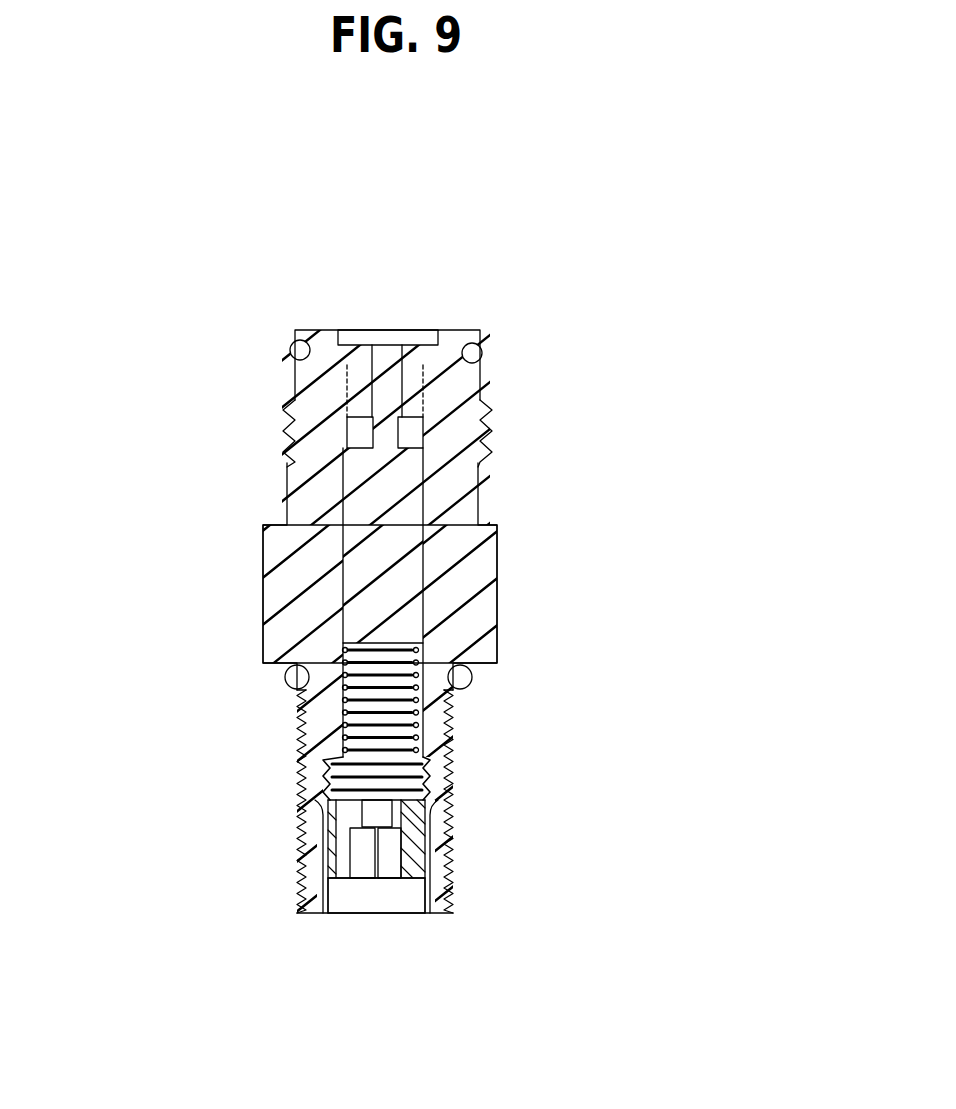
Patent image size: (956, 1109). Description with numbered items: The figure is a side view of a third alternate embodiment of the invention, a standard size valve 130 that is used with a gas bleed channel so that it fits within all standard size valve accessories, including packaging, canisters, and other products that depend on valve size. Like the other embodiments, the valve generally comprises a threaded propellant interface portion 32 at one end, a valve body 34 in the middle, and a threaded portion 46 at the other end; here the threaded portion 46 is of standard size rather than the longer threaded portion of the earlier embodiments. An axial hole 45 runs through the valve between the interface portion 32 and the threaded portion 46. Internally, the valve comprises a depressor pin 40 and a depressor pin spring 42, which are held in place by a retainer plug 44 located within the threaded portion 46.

The standard size valve 130 is at (518, 357).
The threaded propellant interface portion 32 is at (272, 402).
The valve body 34 is at (250, 572).
The depressor pin 40 is at (388, 503).
The depressor pin spring 42 is at (406, 703).
The retainer plug 44 is at (175, 862).
The axial hole 45 is at (378, 900).
The threaded portion 46 is at (284, 730).